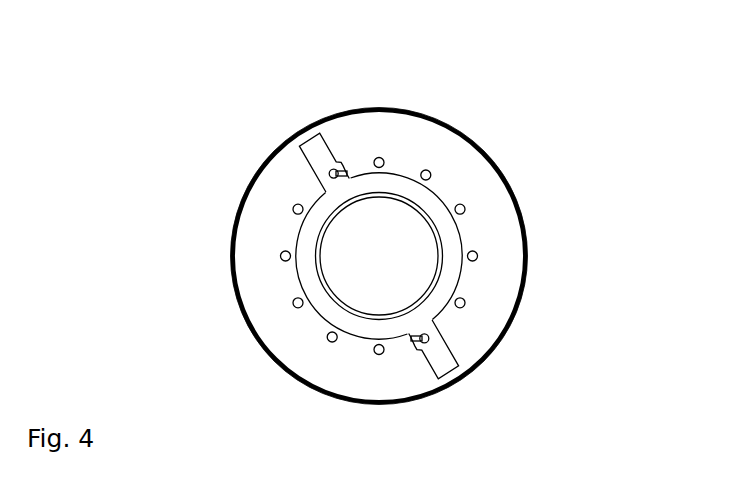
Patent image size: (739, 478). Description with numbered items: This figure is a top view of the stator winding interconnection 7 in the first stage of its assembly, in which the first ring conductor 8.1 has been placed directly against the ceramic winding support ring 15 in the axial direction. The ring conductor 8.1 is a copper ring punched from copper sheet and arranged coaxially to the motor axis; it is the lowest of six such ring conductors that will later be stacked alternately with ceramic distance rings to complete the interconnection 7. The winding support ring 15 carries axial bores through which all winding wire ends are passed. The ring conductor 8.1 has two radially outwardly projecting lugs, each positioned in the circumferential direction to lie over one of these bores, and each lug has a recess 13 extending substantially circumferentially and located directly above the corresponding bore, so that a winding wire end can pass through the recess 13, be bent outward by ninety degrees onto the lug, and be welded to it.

The stator winding interconnection 7 is at (537, 123).
The first ring conductor 8.1 is at (398, 176).
The recess 13 is at (346, 162).
The winding support ring 15 is at (247, 193).